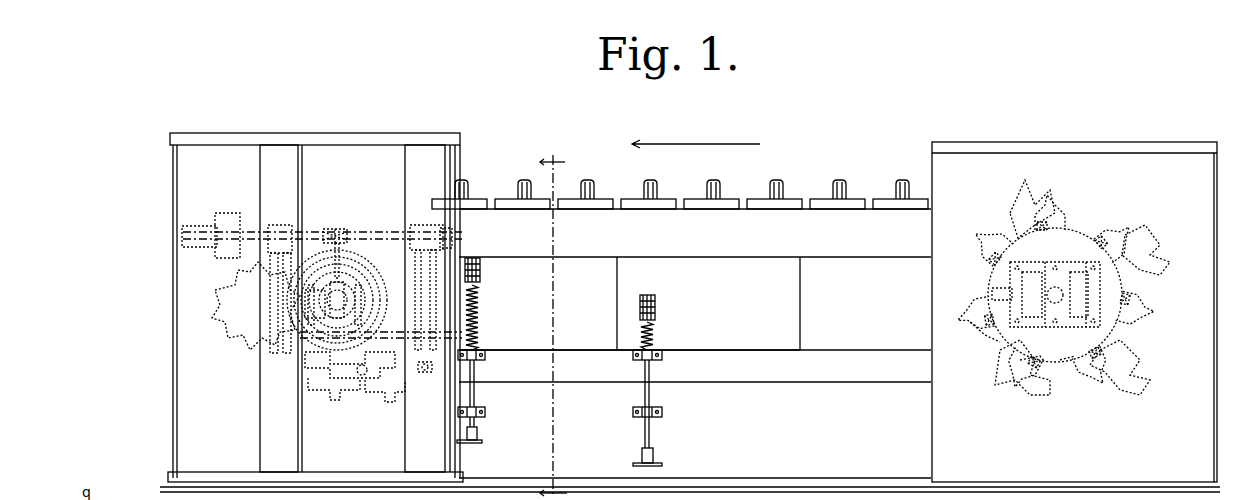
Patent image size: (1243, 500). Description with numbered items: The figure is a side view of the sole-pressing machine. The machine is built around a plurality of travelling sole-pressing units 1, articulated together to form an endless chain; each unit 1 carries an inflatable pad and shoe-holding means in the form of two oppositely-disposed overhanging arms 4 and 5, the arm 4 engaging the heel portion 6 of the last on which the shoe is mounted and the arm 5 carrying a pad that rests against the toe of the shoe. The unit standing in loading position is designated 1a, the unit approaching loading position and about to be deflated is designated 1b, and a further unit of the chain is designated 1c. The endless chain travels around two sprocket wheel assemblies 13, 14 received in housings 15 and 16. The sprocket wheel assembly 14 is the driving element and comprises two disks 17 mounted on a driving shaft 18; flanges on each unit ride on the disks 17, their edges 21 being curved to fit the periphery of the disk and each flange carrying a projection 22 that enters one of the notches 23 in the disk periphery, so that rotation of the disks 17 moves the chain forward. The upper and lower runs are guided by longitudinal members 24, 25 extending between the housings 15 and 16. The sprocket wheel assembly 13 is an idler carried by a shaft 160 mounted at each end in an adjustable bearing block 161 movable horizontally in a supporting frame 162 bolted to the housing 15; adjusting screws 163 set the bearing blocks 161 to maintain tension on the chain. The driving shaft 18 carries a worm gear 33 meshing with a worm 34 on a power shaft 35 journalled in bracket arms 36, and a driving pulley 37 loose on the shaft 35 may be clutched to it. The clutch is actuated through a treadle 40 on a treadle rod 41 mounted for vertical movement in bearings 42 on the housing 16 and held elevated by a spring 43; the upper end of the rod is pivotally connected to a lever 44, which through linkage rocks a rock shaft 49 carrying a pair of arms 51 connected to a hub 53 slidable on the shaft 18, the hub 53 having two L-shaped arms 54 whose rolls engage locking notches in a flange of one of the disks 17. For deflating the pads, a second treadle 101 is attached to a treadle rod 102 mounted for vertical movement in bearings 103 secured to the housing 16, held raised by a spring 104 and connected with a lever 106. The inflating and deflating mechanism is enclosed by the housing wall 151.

The sole-pressing unit 1 is at (250, 312).
The unit in loading position 1a is at (666, 206).
The unit approaching loading position 1b is at (793, 198).
The pallet at third station 1c is at (732, 206).
The overhanging arm 4 is at (553, 318).
The overhanging arm 5 is at (518, 181).
The heel portion of a last 6 is at (715, 188).
The sprocket wheel assembly 13 is at (1095, 240).
The sprocket wheel assembly 14 is at (300, 363).
The housing 15 is at (1172, 182).
The housing 16 is at (183, 262).
The disks 17 is at (352, 370).
The driving shaft 18 is at (350, 365).
The edges of flanges 21 is at (1040, 358).
The projection 22 is at (1064, 362).
The notches 23 is at (985, 334).
The longitudinal member 24 is at (594, 250).
The longitudinal member 25 is at (594, 352).
The worm gear 33 is at (350, 240).
The worm 34 is at (335, 229).
The power shaft 35 is at (386, 240).
The bracket arms 36 is at (270, 232).
The driving pulley 37 is at (228, 213).
The treadle 40 is at (482, 443).
The treadle rod 41 is at (486, 414).
The bearings 42 is at (480, 358).
The spring 43 is at (480, 308).
The lever 44 is at (481, 266).
The rock shaft 49 is at (415, 368).
The arms 51 is at (344, 305).
The hub 53 is at (340, 288).
The L-shaped arms 54 is at (330, 268).
The treadle 101 is at (657, 462).
The treadle rod 102 is at (650, 432).
The bearings 103 is at (652, 400).
The spring 104 is at (656, 332).
The lever 106 is at (656, 302).
The wall of the housing 151 is at (797, 300).
The shaft 160 is at (1055, 303).
The adjustable bearing block 161 is at (1048, 270).
The supporting frame 162 is at (1084, 270).
The adjusting screws 163 is at (995, 290).